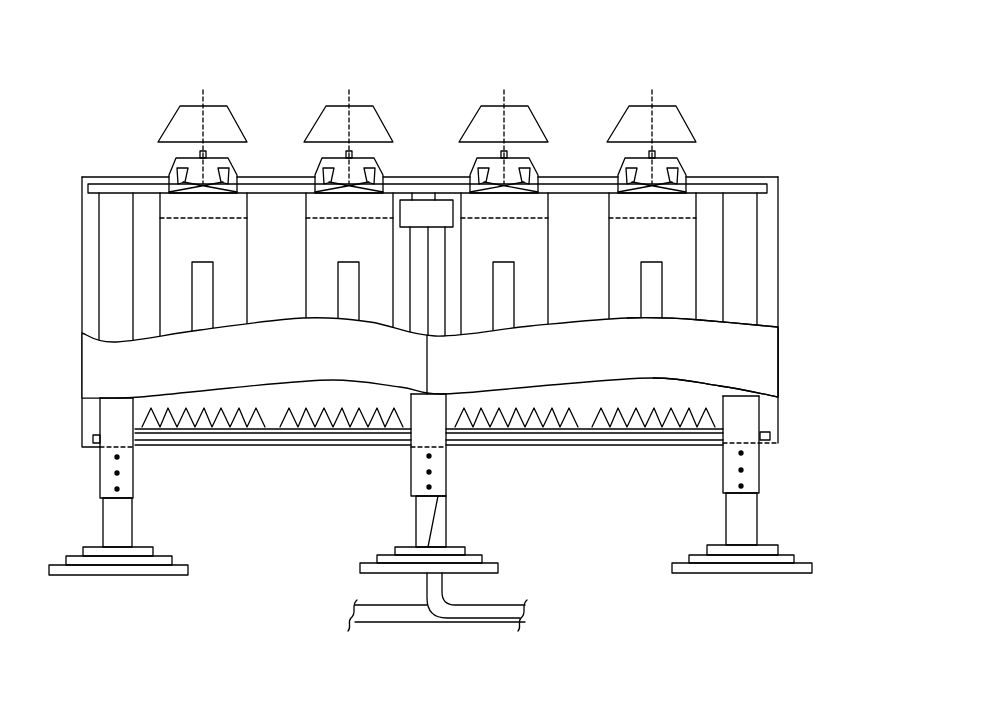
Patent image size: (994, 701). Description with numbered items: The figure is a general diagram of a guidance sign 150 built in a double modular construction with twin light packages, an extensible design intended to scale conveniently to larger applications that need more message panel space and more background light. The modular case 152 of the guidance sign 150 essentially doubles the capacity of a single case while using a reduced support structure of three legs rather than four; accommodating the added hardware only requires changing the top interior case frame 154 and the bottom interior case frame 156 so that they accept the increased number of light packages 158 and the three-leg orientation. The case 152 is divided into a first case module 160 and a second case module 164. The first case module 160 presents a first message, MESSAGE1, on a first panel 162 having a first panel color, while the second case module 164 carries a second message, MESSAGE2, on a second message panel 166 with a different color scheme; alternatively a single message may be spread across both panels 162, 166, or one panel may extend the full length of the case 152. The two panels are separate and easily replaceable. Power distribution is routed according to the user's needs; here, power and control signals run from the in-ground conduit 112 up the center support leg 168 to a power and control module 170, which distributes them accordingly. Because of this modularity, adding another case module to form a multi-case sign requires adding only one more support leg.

The guidance sign 150 is at (777, 59).
The case 152 is at (779, 253).
The top interior case frame 154 is at (779, 180).
The bottom interior case frame 156 is at (779, 437).
The light packages 158 is at (241, 120).
The first case module 160 is at (582, 449).
The first panel 162 is at (779, 367).
The second case module 164 is at (277, 448).
The second message panel 166 is at (88, 364).
The center support leg 168 is at (411, 480).
The power and control module 170 is at (433, 193).
The in-ground conduit 112 is at (510, 605).